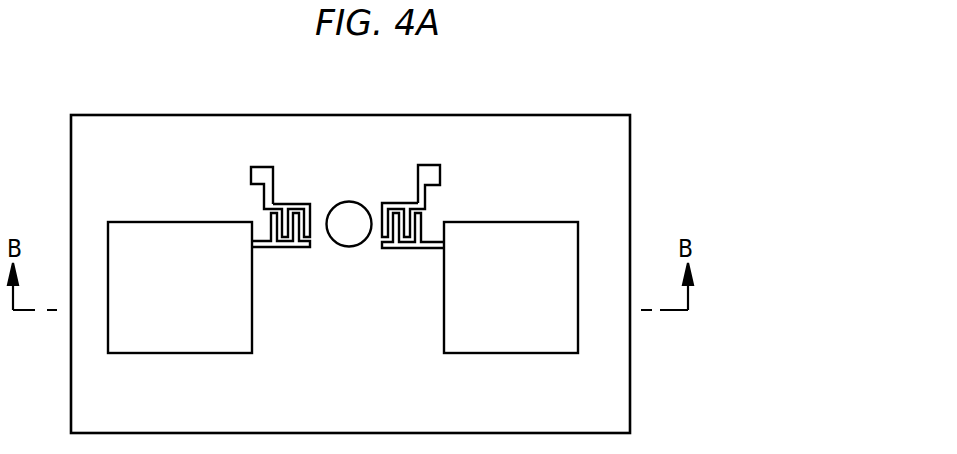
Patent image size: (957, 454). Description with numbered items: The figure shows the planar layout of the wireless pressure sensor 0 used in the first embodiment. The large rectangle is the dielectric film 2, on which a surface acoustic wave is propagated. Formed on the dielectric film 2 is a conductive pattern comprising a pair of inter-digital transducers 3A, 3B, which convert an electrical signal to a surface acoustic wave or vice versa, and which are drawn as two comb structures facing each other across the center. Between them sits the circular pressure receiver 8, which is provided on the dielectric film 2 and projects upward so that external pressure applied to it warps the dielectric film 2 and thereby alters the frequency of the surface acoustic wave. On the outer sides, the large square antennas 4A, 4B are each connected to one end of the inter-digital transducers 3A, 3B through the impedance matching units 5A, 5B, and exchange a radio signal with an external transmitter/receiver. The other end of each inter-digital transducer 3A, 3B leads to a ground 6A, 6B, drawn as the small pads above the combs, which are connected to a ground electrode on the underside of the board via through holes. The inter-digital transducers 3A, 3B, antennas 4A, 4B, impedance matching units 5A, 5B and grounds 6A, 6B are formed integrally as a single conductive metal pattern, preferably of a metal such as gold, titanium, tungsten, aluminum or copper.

The pressure sensor 0 is at (588, 58).
The dielectric film 2 is at (631, 184).
The inter-digital transducer 3A is at (308, 204).
The inter-digital transducer 3B is at (398, 203).
The antenna 4A is at (142, 222).
The antenna 4B is at (508, 222).
The impedance matching unit 5A is at (273, 242).
The impedance matching unit 5B is at (433, 241).
The ground 6A is at (273, 167).
The ground 6B is at (436, 165).
The pressure receiver 8 is at (353, 202).